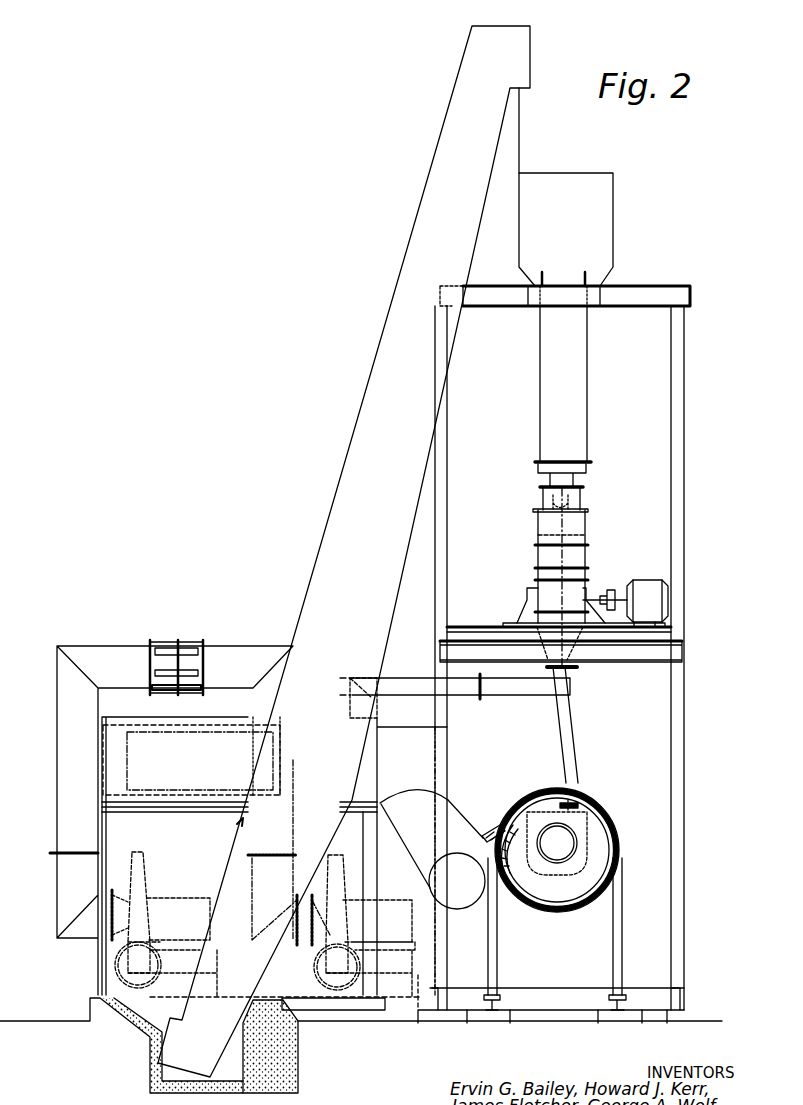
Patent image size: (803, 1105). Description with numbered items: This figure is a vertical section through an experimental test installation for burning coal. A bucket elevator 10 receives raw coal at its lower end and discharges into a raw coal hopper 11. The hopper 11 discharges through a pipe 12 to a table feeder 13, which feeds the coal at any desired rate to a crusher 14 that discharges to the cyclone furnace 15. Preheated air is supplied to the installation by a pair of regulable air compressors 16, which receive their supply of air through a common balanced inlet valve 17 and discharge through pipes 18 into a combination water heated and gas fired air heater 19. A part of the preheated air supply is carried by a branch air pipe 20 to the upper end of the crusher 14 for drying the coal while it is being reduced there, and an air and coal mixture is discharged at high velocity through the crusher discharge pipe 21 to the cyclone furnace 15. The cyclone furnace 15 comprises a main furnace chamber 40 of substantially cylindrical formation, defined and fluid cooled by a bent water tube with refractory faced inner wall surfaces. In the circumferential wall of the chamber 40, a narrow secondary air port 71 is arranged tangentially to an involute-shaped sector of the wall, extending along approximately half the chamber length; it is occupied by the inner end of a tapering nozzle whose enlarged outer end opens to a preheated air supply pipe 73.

The bucket elevator 10 is at (334, 499).
The raw coal hopper 11 is at (613, 222).
The pipe 12 is at (586, 388).
The table feeder 13 is at (582, 503).
The crusher 14 is at (583, 575).
The cyclone furnace 15 is at (620, 823).
The regulable air compressors 16 is at (148, 870).
The common balanced inlet valve 17 is at (184, 650).
The pipes 18 is at (115, 962).
The combination water heated and gas fired air heater 19 is at (200, 740).
The branch air pipe 20 is at (557, 559).
The crusher discharge pipe 21 is at (578, 748).
The main furnace chamber 40 is at (570, 900).
The secondary air port 71 is at (493, 810).
The preheated air supply pipe 73 is at (459, 909).